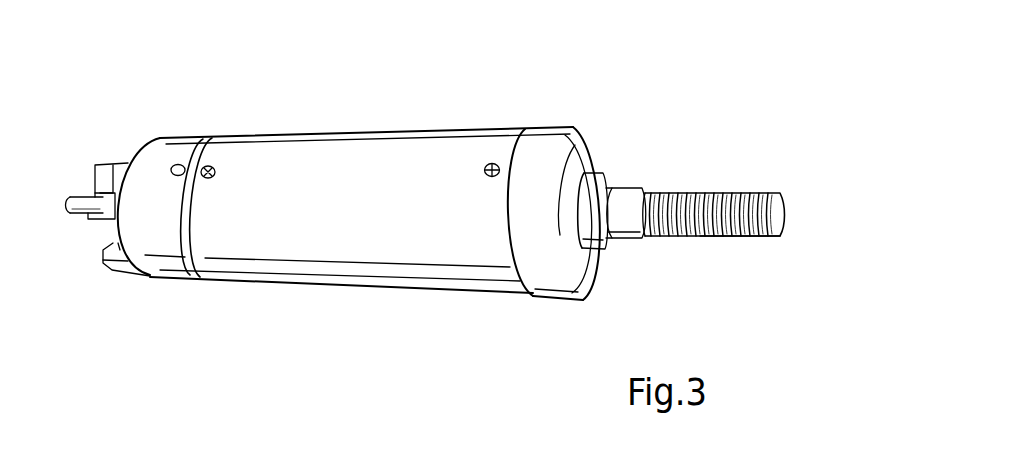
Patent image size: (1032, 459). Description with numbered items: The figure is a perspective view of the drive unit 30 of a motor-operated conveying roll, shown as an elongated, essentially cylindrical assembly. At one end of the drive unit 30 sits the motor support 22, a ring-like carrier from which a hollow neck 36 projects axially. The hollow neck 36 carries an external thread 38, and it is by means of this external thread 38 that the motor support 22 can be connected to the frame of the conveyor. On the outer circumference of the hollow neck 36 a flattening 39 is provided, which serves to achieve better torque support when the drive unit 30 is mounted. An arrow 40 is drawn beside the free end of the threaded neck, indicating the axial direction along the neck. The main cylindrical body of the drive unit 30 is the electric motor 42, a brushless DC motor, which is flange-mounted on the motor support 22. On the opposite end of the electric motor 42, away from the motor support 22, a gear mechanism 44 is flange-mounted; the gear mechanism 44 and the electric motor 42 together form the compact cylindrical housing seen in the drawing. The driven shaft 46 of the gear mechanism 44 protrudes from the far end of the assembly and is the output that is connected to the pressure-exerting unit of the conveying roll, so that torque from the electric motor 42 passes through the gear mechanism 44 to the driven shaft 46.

The drive unit 30 is at (524, 116).
The motor support 22 is at (563, 243).
The hollow neck 36 is at (719, 184).
The external thread 38 is at (745, 185).
The flattening 39 is at (718, 236).
The axial direction 40 is at (795, 221).
The electric motor 42 is at (353, 288).
The gear mechanism 44 is at (153, 277).
The driven shaft 46 is at (83, 220).